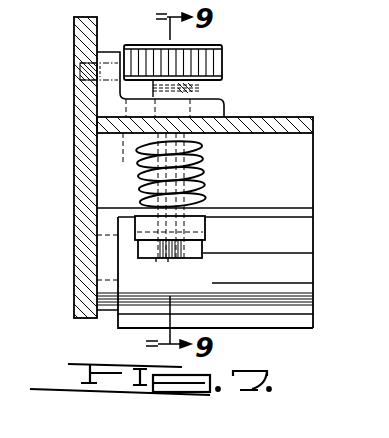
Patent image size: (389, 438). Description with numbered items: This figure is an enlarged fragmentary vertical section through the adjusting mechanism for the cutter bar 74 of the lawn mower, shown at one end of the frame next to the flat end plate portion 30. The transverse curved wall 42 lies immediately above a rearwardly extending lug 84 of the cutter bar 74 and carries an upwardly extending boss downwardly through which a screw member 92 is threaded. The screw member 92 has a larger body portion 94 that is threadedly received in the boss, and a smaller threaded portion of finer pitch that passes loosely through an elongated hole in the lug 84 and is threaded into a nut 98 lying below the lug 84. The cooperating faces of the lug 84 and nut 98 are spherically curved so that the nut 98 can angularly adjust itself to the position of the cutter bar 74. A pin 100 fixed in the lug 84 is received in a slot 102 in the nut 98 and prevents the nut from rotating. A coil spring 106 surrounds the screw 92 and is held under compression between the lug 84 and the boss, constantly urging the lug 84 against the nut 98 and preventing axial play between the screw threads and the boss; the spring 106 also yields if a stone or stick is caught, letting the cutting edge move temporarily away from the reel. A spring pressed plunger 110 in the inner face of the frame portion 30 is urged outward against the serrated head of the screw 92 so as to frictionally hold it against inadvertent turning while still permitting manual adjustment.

The end portion of main frame member 30 is at (77, 40).
The spring pressed plunger 110 is at (121, 56).
The screw member 92 is at (224, 61).
The body portion of screw 94 is at (200, 94).
The curved wall 42 is at (314, 118).
The coil spring 106 is at (205, 198).
The lug portion 84 is at (207, 236).
The nut 98 is at (203, 259).
The slot 102 is at (154, 262).
The pin 100 is at (167, 261).
The cutter bar 74 is at (309, 277).